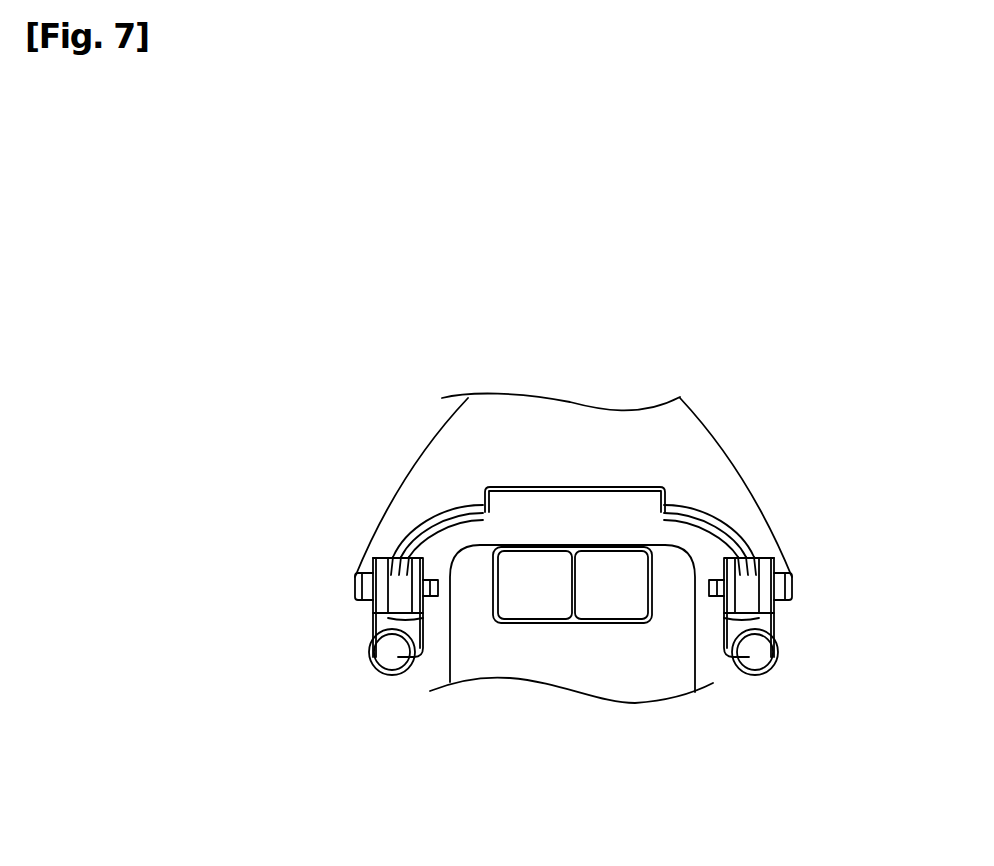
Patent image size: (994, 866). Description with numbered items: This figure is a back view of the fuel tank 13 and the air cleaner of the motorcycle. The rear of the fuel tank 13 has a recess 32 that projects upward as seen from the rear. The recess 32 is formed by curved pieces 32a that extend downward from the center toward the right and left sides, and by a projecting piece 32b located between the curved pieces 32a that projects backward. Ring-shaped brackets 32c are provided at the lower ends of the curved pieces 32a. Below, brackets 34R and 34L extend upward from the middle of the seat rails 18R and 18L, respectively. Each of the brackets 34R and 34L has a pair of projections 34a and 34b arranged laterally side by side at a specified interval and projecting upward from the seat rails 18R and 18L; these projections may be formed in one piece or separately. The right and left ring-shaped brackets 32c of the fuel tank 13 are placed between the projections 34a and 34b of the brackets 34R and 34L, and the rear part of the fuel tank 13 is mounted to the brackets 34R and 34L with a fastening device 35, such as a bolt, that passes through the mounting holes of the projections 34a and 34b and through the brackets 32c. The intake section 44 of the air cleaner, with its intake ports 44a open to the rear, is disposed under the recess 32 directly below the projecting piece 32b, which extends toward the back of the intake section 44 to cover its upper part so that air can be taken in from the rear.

The fuel tank 13 is at (416, 434).
The recess 32 is at (665, 458).
The curved pieces 32a is at (420, 497).
The projecting piece 32b is at (578, 487).
The ring-shaped brackets 32c is at (393, 555).
The left bracket 34L is at (280, 587).
The right bracket 34R is at (888, 595).
The projection 34a is at (372, 627).
The projection 34b is at (372, 616).
The fastening device 35 is at (358, 586).
The left seat rail 18L is at (373, 678).
The right seat rail 18R is at (773, 678).
The intake section 44 is at (571, 653).
The intake ports 44a is at (522, 608).